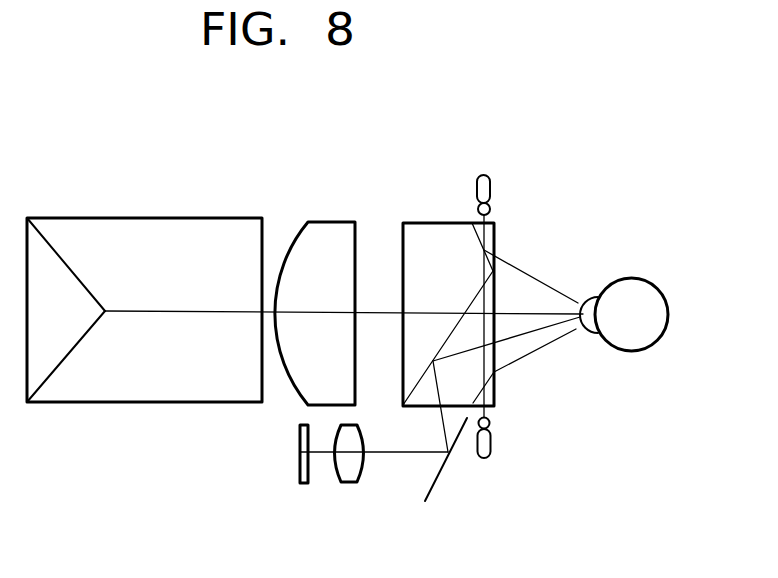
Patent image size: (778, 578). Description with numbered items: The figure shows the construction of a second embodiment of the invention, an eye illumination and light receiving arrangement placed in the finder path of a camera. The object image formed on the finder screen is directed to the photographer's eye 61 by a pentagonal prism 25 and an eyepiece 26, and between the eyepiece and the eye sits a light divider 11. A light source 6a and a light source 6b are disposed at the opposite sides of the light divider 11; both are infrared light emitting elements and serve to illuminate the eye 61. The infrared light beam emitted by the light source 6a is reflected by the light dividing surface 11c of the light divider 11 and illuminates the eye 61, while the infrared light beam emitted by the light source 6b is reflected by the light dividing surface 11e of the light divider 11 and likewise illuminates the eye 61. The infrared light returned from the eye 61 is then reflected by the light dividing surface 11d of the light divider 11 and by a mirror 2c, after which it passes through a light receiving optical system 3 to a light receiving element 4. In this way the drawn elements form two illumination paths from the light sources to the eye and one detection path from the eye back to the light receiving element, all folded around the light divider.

The pentagonal prism 25 is at (90, 393).
The eyepiece 26 is at (298, 388).
The light divider 11 is at (420, 227).
The light dividing surface 11c is at (480, 240).
The light dividing surface 11d is at (455, 326).
The light dividing surface 11e is at (475, 398).
The light source 6a is at (483, 175).
The light source 6b is at (489, 448).
The eye 61 is at (628, 353).
The light receiving element 4 is at (303, 485).
The light receiving optical system 3 is at (350, 485).
The mirror 2c is at (432, 492).